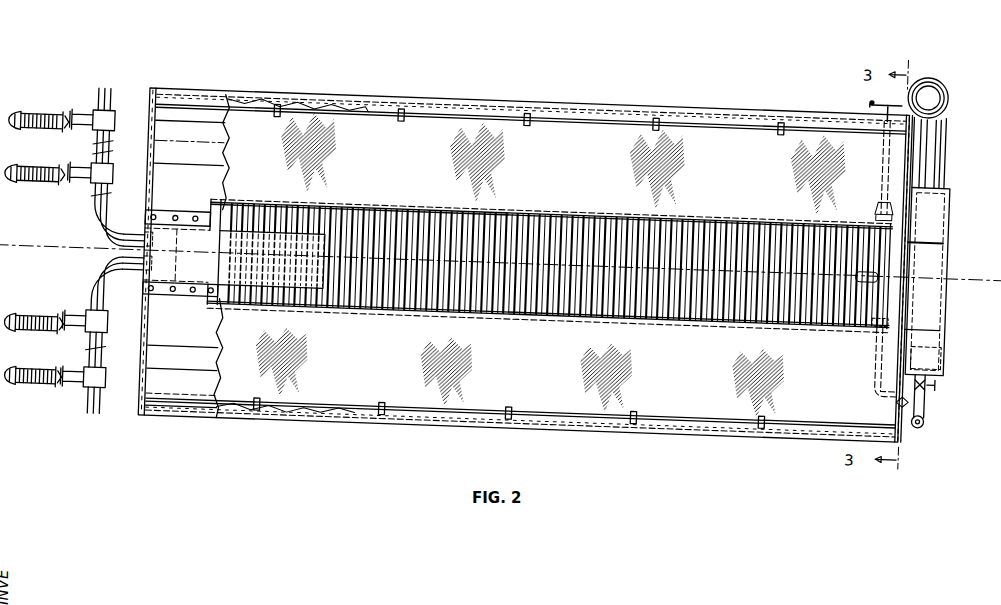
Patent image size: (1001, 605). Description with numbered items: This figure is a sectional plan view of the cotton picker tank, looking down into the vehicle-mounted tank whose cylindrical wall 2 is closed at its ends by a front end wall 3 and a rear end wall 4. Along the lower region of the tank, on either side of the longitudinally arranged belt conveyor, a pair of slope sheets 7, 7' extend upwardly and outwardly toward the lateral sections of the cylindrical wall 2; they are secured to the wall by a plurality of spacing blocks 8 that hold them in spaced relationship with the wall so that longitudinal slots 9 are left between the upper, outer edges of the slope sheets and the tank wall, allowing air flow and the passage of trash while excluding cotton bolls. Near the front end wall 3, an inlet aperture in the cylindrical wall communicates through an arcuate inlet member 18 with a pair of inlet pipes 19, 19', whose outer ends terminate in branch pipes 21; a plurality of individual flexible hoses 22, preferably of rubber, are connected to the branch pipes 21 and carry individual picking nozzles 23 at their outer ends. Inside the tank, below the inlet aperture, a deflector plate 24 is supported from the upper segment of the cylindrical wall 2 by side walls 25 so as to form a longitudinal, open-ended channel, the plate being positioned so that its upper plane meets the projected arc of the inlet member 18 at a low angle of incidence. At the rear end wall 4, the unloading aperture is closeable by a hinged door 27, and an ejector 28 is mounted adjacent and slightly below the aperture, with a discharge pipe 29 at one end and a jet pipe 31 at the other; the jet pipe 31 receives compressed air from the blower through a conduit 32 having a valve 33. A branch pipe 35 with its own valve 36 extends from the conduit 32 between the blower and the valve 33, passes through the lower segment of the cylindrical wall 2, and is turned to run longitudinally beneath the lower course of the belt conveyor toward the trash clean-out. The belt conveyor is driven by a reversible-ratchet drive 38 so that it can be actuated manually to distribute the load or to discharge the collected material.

The cylindrical wall 2 is at (505, 96).
The front end wall 3 is at (150, 108).
The rear end wall 4 is at (930, 126).
The slope sheet 7 is at (531, 96).
The slope sheet 7' is at (519, 435).
The spacing block 8 is at (405, 100).
The longitudinal slot 9 is at (462, 104).
The arcuate inlet member 18 is at (157, 206).
The inlet pipe 19 is at (129, 227).
The inlet pipe 19' is at (117, 284).
The branch pipe 21 is at (80, 115).
The flexible hose 22 is at (40, 116).
The picking nozzle 23 is at (16, 116).
The deflector plate 24 is at (245, 212).
The side wall 25 is at (272, 215).
The hinged door 27 is at (915, 214).
The ejector 28 is at (953, 274).
The discharge pipe 29 is at (948, 70).
The jet pipe 31 is at (950, 328).
The conduit 32 is at (936, 394).
The valve 33 is at (948, 357).
The branch pipe 35 is at (882, 360).
The valve 36 is at (914, 395).
The reversible-ratchet drive 38 is at (882, 184).